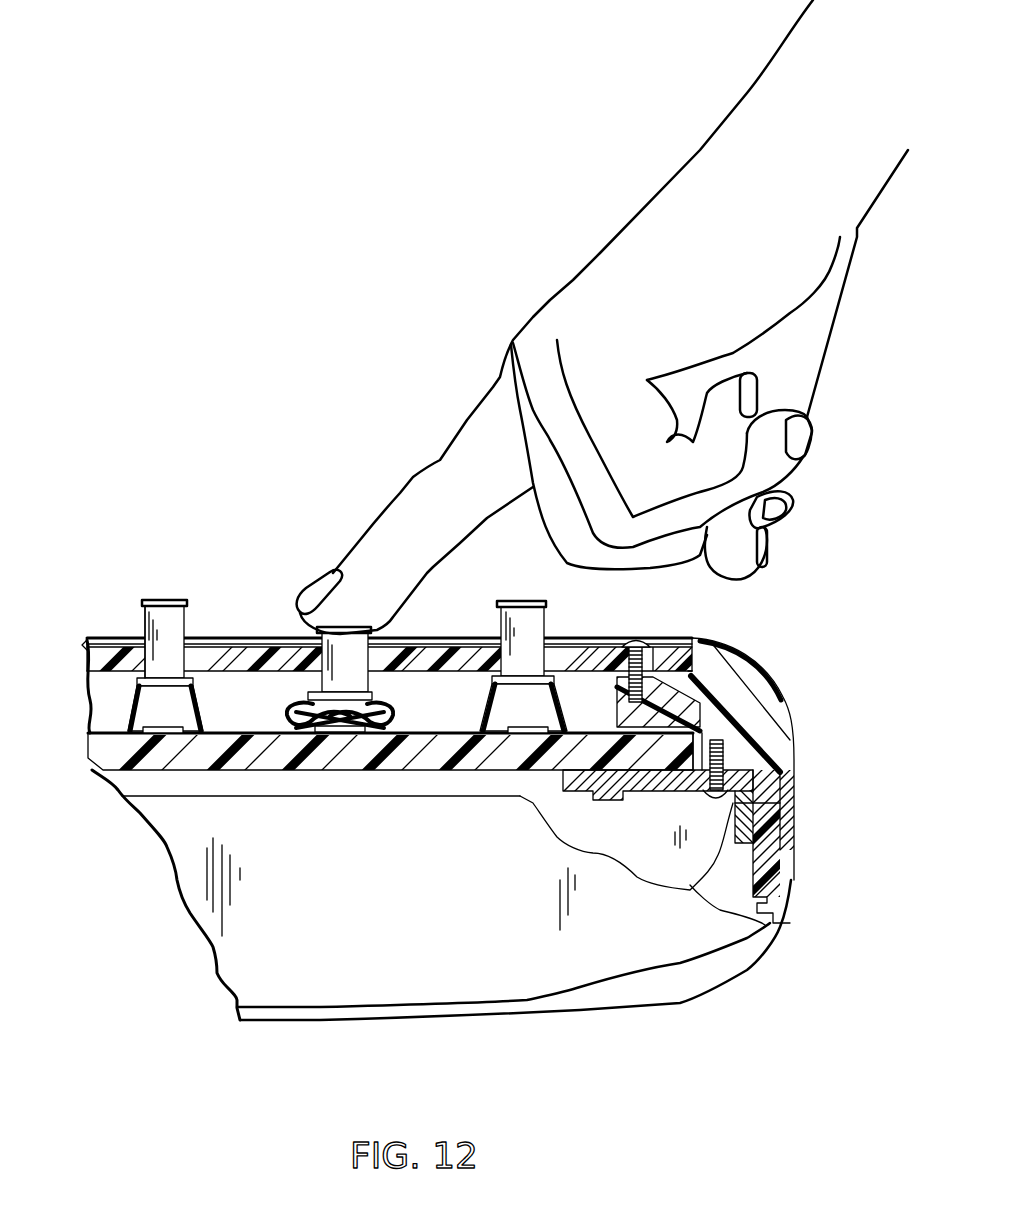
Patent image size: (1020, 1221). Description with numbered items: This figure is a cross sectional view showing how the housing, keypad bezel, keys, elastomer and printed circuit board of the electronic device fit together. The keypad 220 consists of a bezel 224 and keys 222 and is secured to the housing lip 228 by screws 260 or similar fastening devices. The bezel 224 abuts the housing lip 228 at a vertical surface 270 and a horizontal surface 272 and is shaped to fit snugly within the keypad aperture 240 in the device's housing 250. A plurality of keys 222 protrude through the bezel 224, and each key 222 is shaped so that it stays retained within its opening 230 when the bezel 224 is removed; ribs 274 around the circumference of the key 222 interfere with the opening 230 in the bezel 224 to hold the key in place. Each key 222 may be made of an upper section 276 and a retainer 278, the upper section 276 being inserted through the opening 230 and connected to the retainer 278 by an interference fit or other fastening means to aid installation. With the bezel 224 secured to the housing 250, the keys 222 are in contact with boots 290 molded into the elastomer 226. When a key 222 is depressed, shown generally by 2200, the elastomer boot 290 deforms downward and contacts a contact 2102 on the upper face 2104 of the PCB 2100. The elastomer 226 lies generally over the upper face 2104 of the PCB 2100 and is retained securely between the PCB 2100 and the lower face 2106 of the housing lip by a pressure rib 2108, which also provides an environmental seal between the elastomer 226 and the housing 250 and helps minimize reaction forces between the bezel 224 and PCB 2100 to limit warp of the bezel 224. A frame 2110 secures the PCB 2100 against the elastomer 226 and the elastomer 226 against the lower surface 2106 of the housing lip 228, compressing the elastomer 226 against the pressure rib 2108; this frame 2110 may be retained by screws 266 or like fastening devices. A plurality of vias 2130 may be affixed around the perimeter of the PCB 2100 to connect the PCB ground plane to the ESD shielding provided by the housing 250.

The key depression 2200 is at (360, 525).
The keypad aperture 240 is at (280, 625).
The key 222 is at (163, 630).
The opening 230 is at (553, 650).
The bezel 224 is at (257, 662).
The ribs 274 is at (182, 640).
The upper section 276 is at (147, 640).
The keypad 220 is at (125, 632).
The retainer 278 is at (88, 638).
The boot 290 is at (133, 678).
The contact 2102 is at (162, 732).
The printed circuit board (PCB) 2100 is at (237, 760).
The elastomer 226 is at (273, 733).
The upper face 2104 is at (398, 737).
The screws 260 is at (637, 640).
The vertical surface 270 is at (703, 645).
The horizontal surface 272 is at (690, 655).
The housing lip 228 is at (690, 703).
The vias 2130 is at (690, 723).
The housing 250 is at (787, 727).
The lower face of housing lip 2106 is at (703, 732).
The pressure rib 2108 is at (627, 770).
The frame 2110 is at (680, 790).
The screws 266 is at (735, 800).